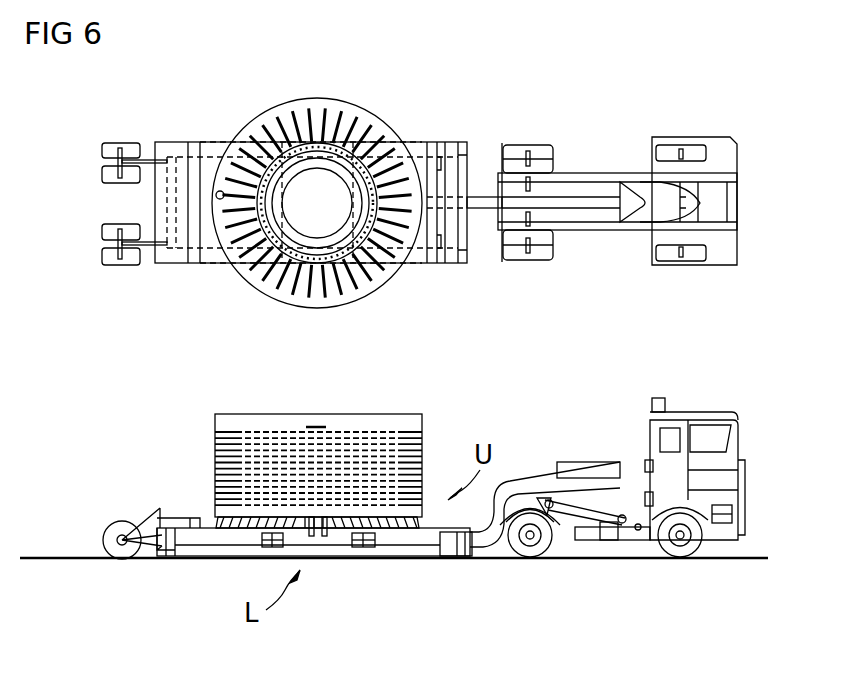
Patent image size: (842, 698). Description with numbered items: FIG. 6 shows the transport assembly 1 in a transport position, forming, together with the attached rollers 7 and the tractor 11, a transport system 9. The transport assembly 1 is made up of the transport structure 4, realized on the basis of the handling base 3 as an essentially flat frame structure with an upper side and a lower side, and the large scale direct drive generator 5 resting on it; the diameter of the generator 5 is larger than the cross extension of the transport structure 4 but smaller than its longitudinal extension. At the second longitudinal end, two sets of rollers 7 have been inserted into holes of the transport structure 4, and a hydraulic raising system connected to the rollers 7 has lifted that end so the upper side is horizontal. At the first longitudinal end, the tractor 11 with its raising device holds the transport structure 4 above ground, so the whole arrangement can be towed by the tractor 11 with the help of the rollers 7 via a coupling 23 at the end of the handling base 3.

The transport assembly 1 is at (402, 77).
The handling base 3 is at (436, 134).
The transport structure 4 is at (208, 273).
The direct drive generator 5 is at (345, 102).
The rollers 7 is at (130, 148).
The transport system 9 is at (548, 111).
The tractor 11 is at (724, 160).
The coupling 23 is at (453, 560).